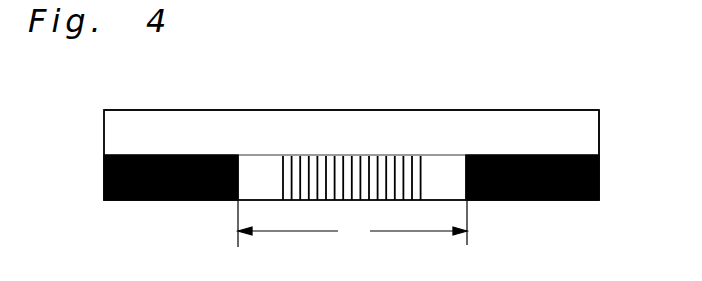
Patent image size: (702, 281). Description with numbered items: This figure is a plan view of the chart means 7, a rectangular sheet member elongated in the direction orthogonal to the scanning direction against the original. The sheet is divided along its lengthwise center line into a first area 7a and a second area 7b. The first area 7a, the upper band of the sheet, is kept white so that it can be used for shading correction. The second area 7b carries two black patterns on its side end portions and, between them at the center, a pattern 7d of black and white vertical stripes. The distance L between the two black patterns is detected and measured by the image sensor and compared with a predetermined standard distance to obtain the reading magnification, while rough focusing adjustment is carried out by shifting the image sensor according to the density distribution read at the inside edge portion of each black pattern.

The chart means 7 is at (535, 106).
The first area 7a is at (614, 112).
The second area 7b is at (614, 156).
The pattern of black and white vertical stripes 7d is at (353, 148).
The distance L is at (352, 224).